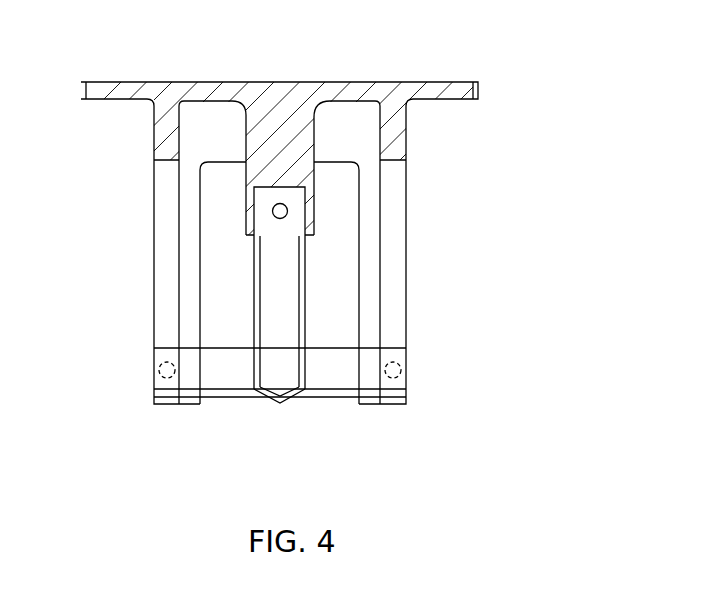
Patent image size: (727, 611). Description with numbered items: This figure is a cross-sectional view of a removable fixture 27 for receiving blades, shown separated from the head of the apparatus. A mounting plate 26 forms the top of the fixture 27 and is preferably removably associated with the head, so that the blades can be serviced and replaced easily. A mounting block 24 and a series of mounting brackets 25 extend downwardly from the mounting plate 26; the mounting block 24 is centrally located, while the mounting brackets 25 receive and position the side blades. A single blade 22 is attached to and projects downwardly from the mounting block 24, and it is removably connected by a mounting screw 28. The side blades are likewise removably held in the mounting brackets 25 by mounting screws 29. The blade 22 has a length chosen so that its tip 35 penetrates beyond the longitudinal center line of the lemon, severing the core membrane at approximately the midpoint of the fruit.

The blade 22 is at (282, 268).
The mounting block 24 is at (305, 130).
The mounting brackets 25 is at (163, 250).
The mounting plate 26 is at (430, 87).
The removable fixture 27 is at (547, 159).
The mounting screw 28 is at (285, 206).
The mounting screws 29 is at (152, 357).
The tip 35 is at (280, 402).